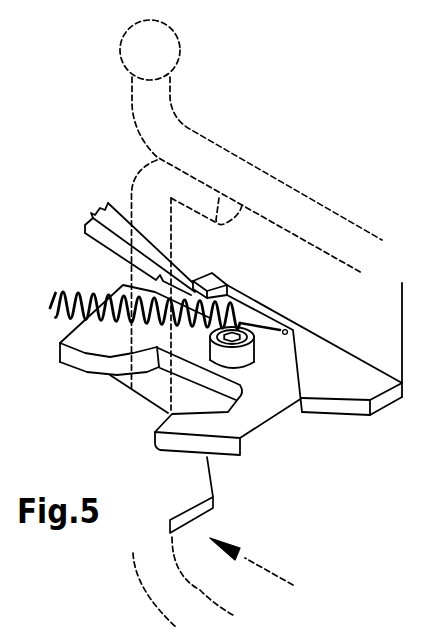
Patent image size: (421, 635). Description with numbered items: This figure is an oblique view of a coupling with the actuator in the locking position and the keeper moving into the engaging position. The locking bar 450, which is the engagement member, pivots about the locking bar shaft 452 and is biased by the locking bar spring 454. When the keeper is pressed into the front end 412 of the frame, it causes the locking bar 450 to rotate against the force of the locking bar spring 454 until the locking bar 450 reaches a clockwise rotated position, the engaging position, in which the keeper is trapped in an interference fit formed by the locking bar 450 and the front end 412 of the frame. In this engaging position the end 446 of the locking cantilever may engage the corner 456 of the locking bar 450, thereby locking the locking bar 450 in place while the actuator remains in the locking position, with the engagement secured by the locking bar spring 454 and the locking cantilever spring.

The front end of frame 412 is at (145, 401).
The end of locking cantilever 446 is at (187, 275).
The locking bar 450 is at (288, 356).
The locking bar shaft 452 is at (245, 357).
The locking bar spring 454 is at (85, 290).
The corner of locking bar 456 is at (226, 312).